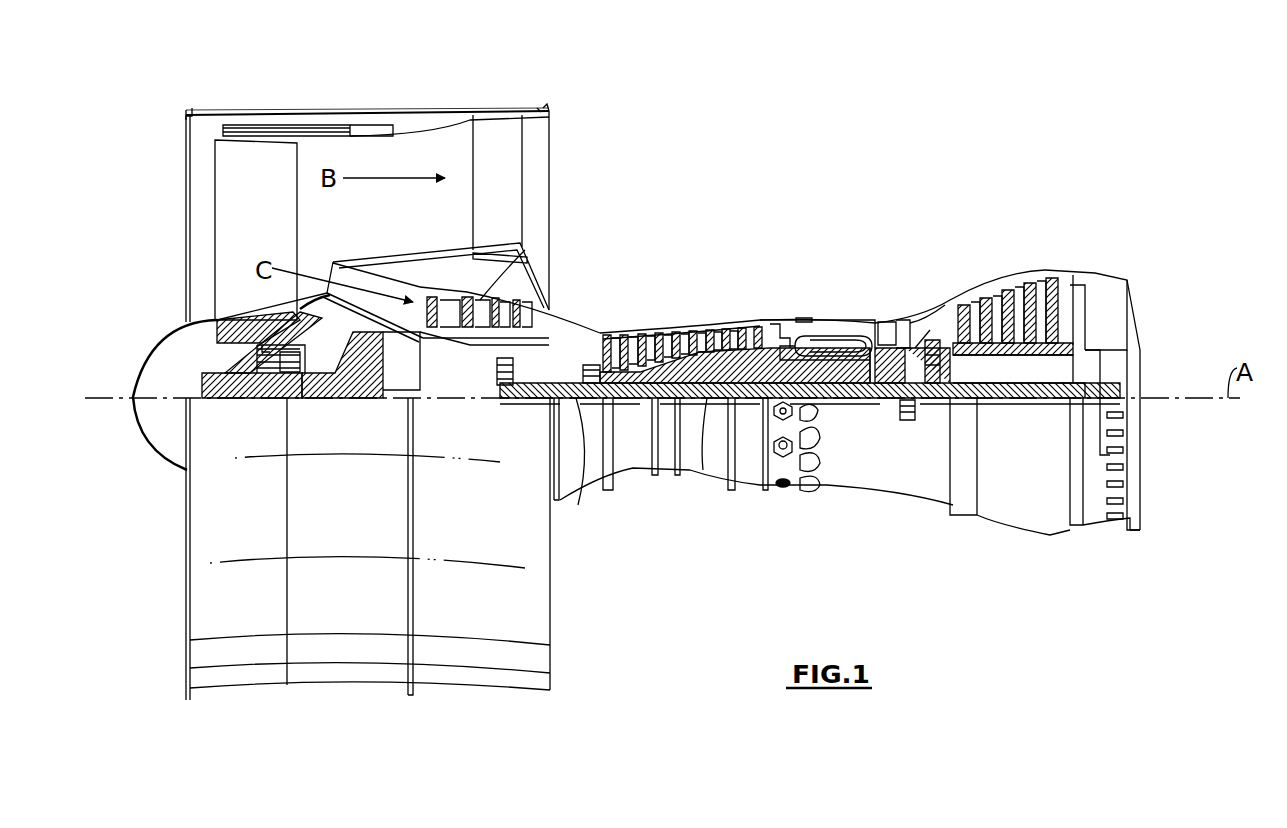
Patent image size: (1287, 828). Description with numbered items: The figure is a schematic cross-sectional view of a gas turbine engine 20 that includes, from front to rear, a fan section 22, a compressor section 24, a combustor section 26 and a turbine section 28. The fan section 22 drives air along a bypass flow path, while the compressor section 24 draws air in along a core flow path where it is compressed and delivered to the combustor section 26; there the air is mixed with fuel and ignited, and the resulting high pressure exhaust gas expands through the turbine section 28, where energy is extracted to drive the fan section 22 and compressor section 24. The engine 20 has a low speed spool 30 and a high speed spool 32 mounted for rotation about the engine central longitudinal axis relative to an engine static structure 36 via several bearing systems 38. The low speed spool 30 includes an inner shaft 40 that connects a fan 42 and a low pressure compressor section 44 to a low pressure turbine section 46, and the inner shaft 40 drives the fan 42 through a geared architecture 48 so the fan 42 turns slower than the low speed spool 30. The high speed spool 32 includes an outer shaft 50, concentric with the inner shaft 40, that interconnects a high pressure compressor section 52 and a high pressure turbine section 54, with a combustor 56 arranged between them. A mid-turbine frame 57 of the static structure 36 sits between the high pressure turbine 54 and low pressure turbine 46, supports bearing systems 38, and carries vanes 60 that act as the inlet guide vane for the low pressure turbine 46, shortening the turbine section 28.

The gas turbine engine 20 is at (828, 168).
The fan section 22 is at (297, 104).
The compressor section 24 is at (600, 305).
The combustor section 26 is at (822, 295).
The turbine section 28 is at (970, 262).
The low speed spool 30 is at (706, 475).
The high speed spool 32 is at (750, 347).
The engine static structure 36 is at (752, 470).
The bearing systems 38 is at (300, 380).
The inner shaft 40 is at (578, 500).
The fan 42 is at (269, 238).
The low pressure compressor section 44 is at (526, 252).
The low pressure turbine section 46 is at (1015, 283).
The geared architecture 48 is at (364, 372).
The outer shaft 50 is at (832, 392).
The high pressure compressor section 52 is at (695, 327).
The high pressure turbine section 54 is at (890, 313).
The combustor 56 is at (822, 342).
The mid-turbine frame 57 is at (932, 303).
The vanes 60 is at (963, 367).